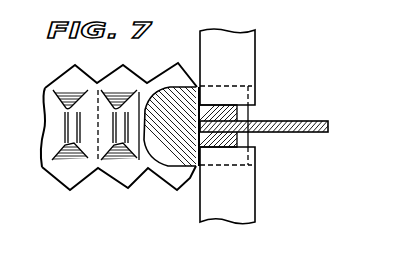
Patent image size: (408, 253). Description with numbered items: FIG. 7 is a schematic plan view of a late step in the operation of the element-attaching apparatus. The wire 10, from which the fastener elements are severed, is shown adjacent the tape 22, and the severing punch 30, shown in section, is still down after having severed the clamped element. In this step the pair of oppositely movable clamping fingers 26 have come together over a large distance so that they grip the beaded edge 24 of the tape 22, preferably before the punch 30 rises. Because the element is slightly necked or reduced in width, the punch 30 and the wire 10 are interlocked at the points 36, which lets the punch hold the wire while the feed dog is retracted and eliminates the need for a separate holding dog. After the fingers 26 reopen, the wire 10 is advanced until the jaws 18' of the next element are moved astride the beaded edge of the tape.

The wire 10 is at (52, 175).
The jaws of the next element 18' is at (160, 134).
The tape 22 is at (318, 115).
The beaded edge 24 is at (228, 104).
The clamping fingers 26 is at (245, 48).
The severing punch 30 is at (166, 148).
The necked points 36 is at (194, 83).